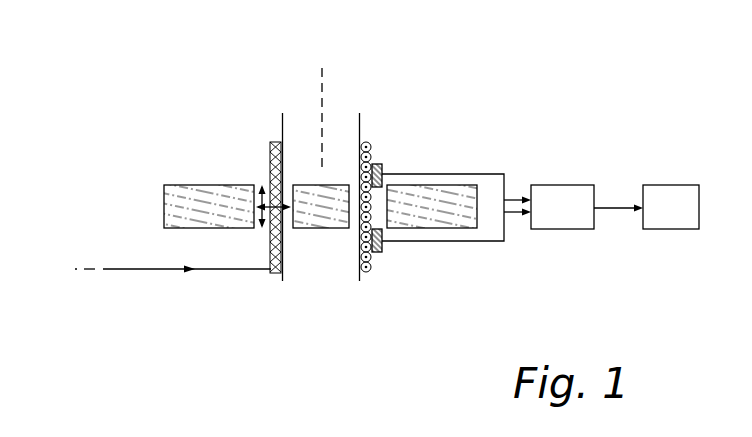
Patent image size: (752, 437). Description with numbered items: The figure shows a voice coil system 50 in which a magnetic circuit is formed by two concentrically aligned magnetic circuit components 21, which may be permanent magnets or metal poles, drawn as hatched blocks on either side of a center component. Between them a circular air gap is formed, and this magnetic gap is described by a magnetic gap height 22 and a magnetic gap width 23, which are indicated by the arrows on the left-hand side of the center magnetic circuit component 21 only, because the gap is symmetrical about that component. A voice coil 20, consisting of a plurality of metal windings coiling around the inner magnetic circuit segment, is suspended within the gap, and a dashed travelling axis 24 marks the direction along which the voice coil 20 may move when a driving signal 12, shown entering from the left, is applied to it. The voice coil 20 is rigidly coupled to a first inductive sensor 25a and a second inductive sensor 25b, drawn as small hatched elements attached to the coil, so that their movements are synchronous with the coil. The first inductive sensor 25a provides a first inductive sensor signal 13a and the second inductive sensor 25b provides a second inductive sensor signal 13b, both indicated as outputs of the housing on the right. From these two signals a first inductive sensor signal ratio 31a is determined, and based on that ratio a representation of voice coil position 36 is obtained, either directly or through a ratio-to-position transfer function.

The voice coil system 50 is at (99, 63).
The driving signal 12 is at (155, 270).
The first inductive sensor signal 13a is at (480, 173).
The second inductive sensor signal 13b is at (492, 242).
The voice coil 20 is at (270, 157).
The magnetic circuit component 21 is at (164, 196).
The magnetic gap height 22 is at (250, 195).
The magnetic gap width 23 is at (262, 186).
The travelling axis 24 is at (322, 94).
The first inductive sensor 25a is at (383, 164).
The second inductive sensor 25b is at (377, 255).
The first inductive sensor signal ratio 31a is at (540, 221).
The representation of voice coil position 36 is at (656, 221).